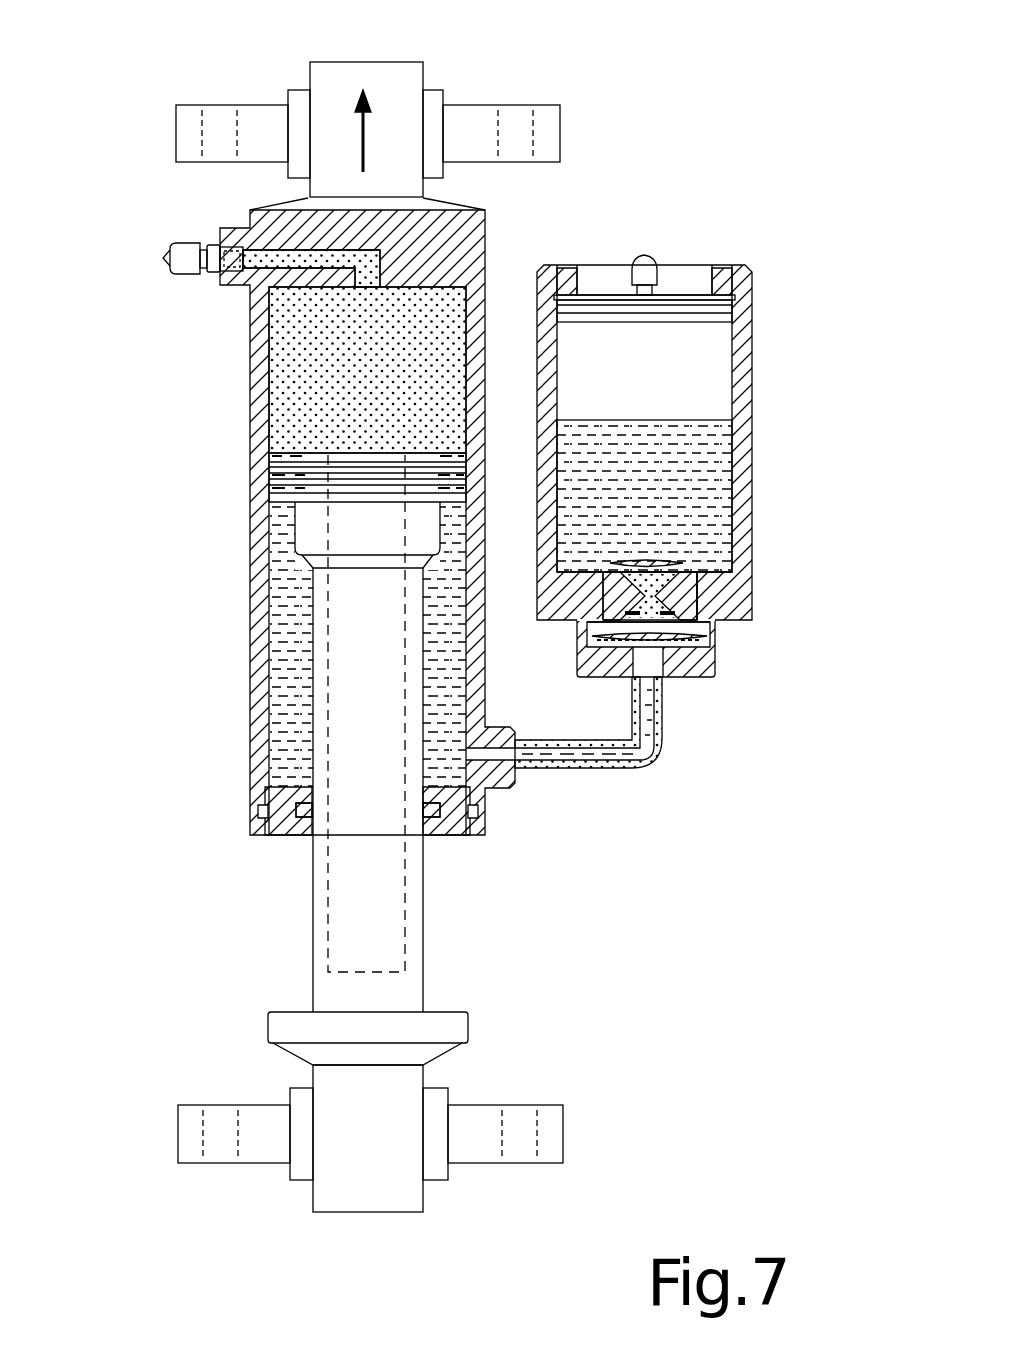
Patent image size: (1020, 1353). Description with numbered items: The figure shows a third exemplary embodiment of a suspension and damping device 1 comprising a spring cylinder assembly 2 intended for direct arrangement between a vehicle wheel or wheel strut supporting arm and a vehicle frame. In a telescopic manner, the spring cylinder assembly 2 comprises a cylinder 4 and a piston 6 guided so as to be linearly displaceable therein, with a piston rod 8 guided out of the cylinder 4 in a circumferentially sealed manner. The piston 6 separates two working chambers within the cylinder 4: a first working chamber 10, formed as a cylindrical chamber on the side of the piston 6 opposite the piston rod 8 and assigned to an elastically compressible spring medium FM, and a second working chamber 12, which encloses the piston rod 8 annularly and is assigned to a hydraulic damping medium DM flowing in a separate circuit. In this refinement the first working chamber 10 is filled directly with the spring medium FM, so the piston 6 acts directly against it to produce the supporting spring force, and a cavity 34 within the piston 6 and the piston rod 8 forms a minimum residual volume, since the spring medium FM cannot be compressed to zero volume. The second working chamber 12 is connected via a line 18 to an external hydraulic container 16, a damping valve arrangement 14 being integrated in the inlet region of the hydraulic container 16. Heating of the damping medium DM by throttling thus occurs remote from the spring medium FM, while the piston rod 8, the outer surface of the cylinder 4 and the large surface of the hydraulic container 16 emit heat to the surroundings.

The suspension and damping device 1 is at (710, 130).
The spring cylinder assembly 2 is at (238, 423).
The cylinder 4 is at (260, 585).
The piston 6 is at (310, 445).
The piston rod 8 is at (313, 880).
The first working chamber 10 is at (430, 320).
The second working chamber 12 is at (278, 730).
The damping valve arrangement 14 is at (712, 638).
The hydraulic container 16 is at (742, 357).
The line 18 is at (640, 768).
The cavity 34 is at (398, 888).
The spring medium FM is at (293, 357).
The damping medium DM is at (283, 648).